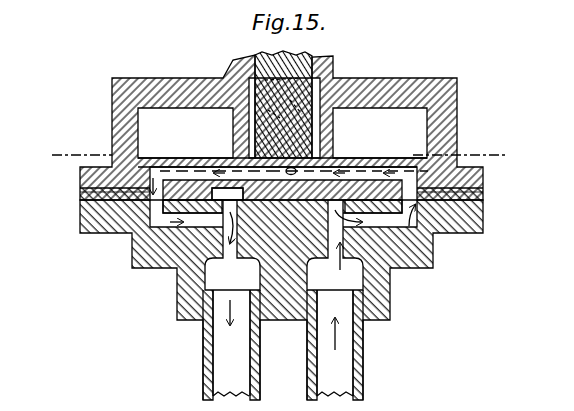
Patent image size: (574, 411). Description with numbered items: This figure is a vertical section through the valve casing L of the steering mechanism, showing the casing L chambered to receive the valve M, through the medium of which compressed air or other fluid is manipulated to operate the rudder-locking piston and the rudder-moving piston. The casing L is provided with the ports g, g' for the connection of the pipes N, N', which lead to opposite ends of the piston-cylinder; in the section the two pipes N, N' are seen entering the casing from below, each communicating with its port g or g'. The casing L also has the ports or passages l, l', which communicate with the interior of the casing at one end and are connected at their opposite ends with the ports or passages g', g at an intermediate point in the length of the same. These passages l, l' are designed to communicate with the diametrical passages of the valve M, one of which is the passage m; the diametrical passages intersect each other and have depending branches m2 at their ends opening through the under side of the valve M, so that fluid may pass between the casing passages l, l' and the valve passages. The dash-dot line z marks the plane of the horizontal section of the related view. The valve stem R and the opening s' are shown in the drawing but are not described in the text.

The valve casing L is at (275, 127).
The port g is at (281, 300).
The diametrical passage m is at (201, 176).
The valve M is at (176, 161).
The valve stem R is at (283, 73).
The section line z z is at (277, 157).
The depending branch m2 is at (507, 185).
The port or passage l' is at (121, 208).
The port or passage l is at (429, 214).
The valve seat opening s' is at (185, 242).
The port g' is at (250, 265).
The pipe N' is at (209, 345).
The pipe N is at (350, 345).